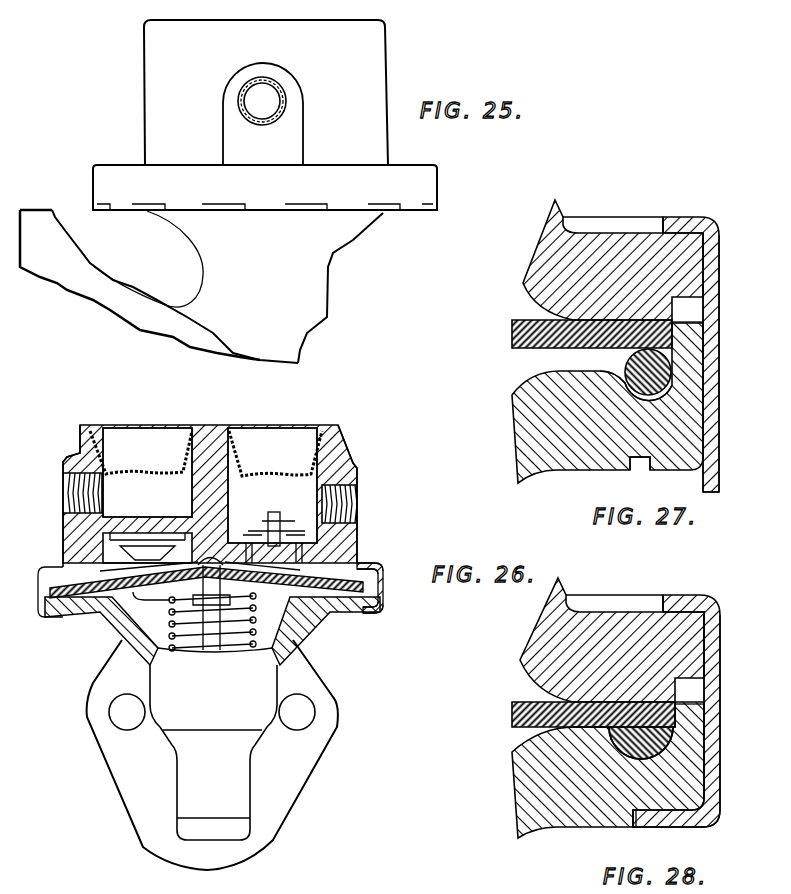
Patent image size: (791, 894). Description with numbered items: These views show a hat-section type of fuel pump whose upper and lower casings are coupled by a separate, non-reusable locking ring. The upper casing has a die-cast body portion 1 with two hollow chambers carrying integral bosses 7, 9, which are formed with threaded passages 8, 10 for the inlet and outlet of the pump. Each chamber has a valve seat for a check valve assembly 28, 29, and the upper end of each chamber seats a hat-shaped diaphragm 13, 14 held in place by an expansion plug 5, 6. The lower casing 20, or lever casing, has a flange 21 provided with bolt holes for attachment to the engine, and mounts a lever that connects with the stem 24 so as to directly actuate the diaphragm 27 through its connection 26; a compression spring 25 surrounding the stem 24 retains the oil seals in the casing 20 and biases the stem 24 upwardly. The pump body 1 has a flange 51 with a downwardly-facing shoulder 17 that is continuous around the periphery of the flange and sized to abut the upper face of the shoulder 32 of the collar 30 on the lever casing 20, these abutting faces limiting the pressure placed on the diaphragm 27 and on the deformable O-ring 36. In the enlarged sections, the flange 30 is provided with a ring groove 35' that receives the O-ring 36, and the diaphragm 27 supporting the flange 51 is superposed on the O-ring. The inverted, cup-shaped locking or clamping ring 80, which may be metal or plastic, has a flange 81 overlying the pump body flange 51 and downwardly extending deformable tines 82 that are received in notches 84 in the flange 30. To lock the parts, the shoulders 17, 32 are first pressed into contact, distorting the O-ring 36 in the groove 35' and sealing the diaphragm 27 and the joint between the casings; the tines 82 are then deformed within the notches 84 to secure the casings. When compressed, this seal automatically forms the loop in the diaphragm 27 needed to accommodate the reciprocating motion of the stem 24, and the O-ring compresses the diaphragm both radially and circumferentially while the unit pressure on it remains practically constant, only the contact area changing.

In FIG. 25, the body portion 1 is at (383, 72).
In FIG. 26, the body portion 1 is at (342, 440).
In FIG. 26, the expansion plug 5 is at (291, 426).
In FIG. 26, the expansion plug 6 is at (150, 428).
In FIG. 25, the boss 7 is at (283, 67).
In FIG. 26, the boss 7 is at (75, 455).
In FIG. 25, the threaded passage 8 is at (280, 94).
In FIG. 26, the threaded passage 8 is at (67, 490).
In FIG. 26, the boss 9 is at (360, 468).
In FIG. 26, the threaded passage 10 is at (358, 504).
In FIG. 26, the hat-shaped diaphragm 13 is at (243, 462).
In FIG. 26, the hat-shaped diaphragm 14 is at (182, 462).
In FIG. 26, the downwardly-facing shoulder 17 is at (384, 575).
In FIG. 27, the downwardly-facing shoulder 17 is at (690, 297).
In FIG. 28, the downwardly-facing shoulder 17 is at (690, 678).
In FIG. 25, the lower casing 20 is at (347, 243).
In FIG. 26, the lower casing 20 is at (315, 633).
In FIG. 25, the flange 21 is at (52, 182).
In FIG. 26, the flange 21 is at (338, 717).
In FIG. 26, the stem 24 is at (250, 621).
In FIG. 26, the compression spring 25 is at (250, 600).
In FIG. 26, the connection 26 is at (150, 598).
In FIG. 26, the diaphragm 27 is at (100, 598).
In FIG. 27, the diaphragm 27 is at (518, 318).
In FIG. 28, the diaphragm 27 is at (520, 701).
In FIG. 26, the valve assembly 28 is at (164, 500).
In FIG. 26, the valve assembly 29 is at (268, 512).
In FIG. 26, the collar 30 is at (385, 604).
In FIG. 27, the collar 30 is at (690, 410).
In FIG. 28, the collar 30 is at (690, 790).
In FIG. 27, the shoulder 32 is at (705, 343).
In FIG. 28, the shoulder 32 is at (706, 697).
In FIG. 27, the ring groove 35' is at (622, 433).
In FIG. 28, the ring groove 35' is at (619, 787).
In FIG. 27, the O-ring 36 is at (668, 375).
In FIG. 28, the O-ring 36 is at (662, 752).
In FIG. 26, the flange 51 is at (366, 562).
In FIG. 27, the flange 51 is at (654, 232).
In FIG. 28, the flange 51 is at (629, 612).
In FIG. 25, the locking ring 80 is at (438, 186).
In FIG. 26, the locking ring 80 is at (386, 589).
In FIG. 27, the locking ring 80 is at (721, 312).
In FIG. 28, the locking ring 80 is at (718, 744).
In FIG. 26, the flange 81 is at (380, 562).
In FIG. 27, the flange 81 is at (688, 216).
In FIG. 28, the flange 81 is at (688, 595).
In FIG. 25, the tines 82 is at (410, 209).
In FIG. 26, the tines 82 is at (376, 614).
In FIG. 27, the tines 82 is at (720, 485).
In FIG. 28, the tines 82 is at (670, 822).
In FIG. 27, the notches 84 is at (634, 471).
In FIG. 28, the notches 84 is at (633, 813).